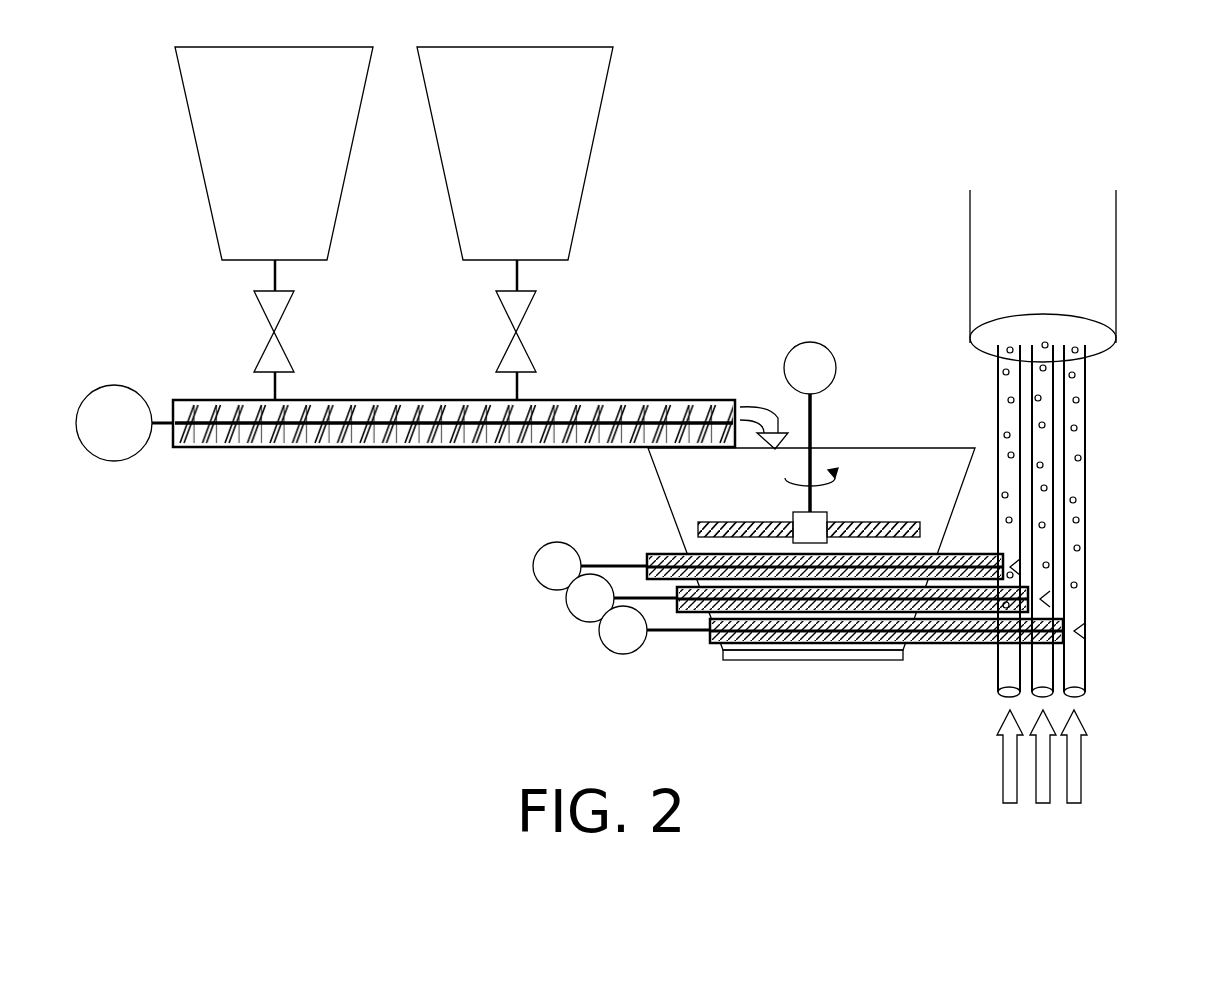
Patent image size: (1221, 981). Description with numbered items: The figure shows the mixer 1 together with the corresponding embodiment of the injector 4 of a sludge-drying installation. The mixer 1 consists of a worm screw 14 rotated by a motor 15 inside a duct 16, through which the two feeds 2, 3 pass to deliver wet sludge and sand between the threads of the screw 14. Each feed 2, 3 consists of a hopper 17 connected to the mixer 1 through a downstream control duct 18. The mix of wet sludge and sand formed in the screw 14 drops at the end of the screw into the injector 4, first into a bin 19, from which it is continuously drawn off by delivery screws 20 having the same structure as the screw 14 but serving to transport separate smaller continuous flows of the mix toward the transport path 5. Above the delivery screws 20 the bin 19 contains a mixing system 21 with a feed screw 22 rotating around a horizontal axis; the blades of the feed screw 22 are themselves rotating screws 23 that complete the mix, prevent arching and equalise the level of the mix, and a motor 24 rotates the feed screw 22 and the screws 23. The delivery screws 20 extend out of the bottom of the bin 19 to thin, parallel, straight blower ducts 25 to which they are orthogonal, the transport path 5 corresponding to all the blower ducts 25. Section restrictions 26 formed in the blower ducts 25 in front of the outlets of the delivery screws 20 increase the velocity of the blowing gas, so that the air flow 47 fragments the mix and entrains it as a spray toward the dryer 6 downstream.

The mixer 1 is at (487, 578).
The feed 2 is at (232, 276).
The feed 3 is at (539, 223).
The injector 4 is at (1106, 519).
The transport path 5 is at (1090, 447).
The dryer 6 is at (1122, 281).
The worm screw 14 is at (317, 447).
The motor 15 is at (122, 445).
The duct 16 is at (454, 417).
The hopper 17 is at (580, 126).
The control duct 18 is at (532, 352).
The bin 19 is at (660, 488).
The delivery screws 20 is at (727, 646).
The mixing system 21 is at (828, 400).
The feed screw 22 is at (856, 504).
The rotating screws 23 is at (715, 527).
The motor 24 is at (812, 340).
The blower ducts 25 is at (1050, 562).
The section restrictions 26 is at (1058, 601).
The air flow 47 is at (1098, 763).